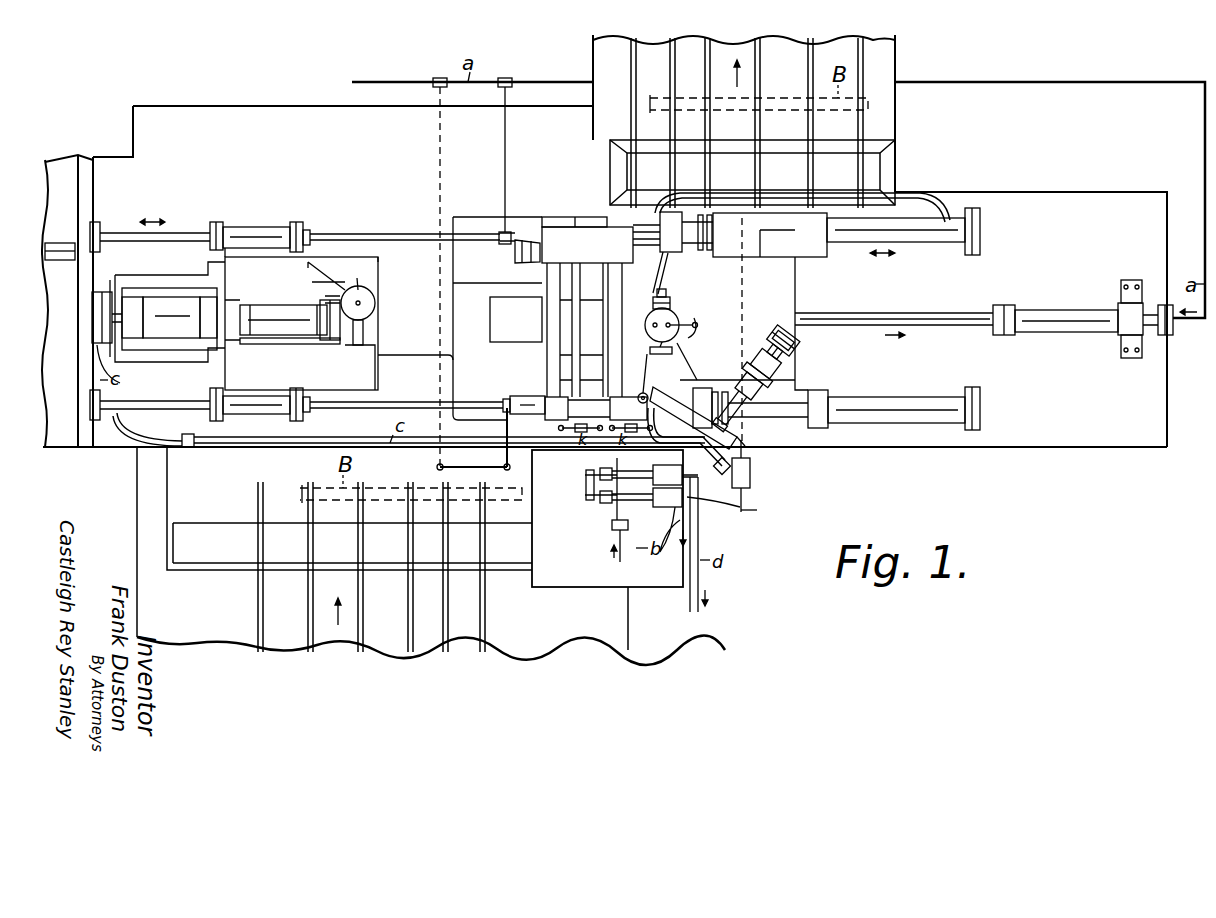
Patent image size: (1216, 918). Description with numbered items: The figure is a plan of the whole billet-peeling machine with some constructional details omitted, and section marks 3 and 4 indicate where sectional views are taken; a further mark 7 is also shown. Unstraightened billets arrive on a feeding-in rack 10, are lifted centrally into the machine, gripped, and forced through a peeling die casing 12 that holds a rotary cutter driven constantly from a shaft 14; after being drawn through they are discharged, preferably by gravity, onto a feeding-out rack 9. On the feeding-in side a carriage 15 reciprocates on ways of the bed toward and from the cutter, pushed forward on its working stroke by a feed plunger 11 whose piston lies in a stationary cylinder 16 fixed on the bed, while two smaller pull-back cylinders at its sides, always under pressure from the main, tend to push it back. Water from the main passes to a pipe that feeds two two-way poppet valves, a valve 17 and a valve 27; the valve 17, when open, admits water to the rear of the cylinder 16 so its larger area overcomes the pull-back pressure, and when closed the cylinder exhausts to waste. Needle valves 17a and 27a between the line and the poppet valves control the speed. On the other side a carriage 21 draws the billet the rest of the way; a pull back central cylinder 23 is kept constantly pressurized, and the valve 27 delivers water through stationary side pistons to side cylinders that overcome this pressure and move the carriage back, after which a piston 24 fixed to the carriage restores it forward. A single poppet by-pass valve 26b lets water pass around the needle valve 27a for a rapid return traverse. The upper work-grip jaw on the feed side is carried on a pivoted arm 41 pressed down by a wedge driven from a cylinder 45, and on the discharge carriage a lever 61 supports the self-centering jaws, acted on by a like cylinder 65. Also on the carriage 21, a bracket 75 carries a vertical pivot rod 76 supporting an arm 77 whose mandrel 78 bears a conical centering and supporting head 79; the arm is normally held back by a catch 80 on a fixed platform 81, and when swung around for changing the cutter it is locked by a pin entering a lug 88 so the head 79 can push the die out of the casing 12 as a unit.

The section line 3 is at (358, 203).
The section line 4 is at (495, 175).
The pipe 7 is at (663, 172).
The feeding-out rack 9 is at (805, 122).
The feeding-in rack 10 is at (408, 608).
The feed plunger 11 is at (296, 324).
The peeling die casing 12 is at (582, 323).
The shaft 14 is at (515, 260).
The carriage 15 is at (272, 296).
The stationary cylinder 16 is at (176, 300).
The two-way poppet valve 17 is at (649, 475).
The needle valve 17a is at (612, 470).
The carriage 21 is at (790, 352).
The pull back central cylinder 23 is at (1055, 320).
The piston 24 is at (943, 322).
The by-pass valve 26b is at (672, 545).
The two-way poppet valve 27 is at (641, 497).
The needle valve 27a is at (608, 504).
The arm 41 is at (362, 350).
The cylinder 45 is at (376, 318).
The lever 61 is at (668, 296).
The cylinder 65 is at (678, 312).
The bracket 75 is at (645, 372).
The vertical pivot rod 76 is at (638, 400).
The arm 77 is at (747, 455).
The mandrel 78 is at (745, 447).
The conical centering and supporting head 79 is at (752, 372).
The catch 80 is at (782, 347).
The platform 81 is at (768, 332).
The lug 88 is at (650, 338).